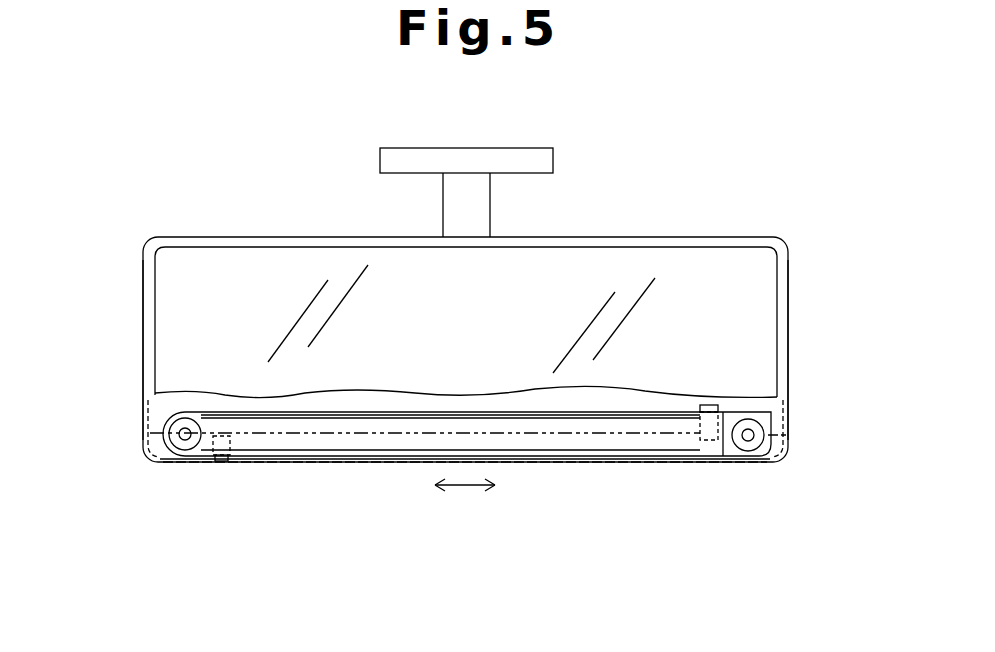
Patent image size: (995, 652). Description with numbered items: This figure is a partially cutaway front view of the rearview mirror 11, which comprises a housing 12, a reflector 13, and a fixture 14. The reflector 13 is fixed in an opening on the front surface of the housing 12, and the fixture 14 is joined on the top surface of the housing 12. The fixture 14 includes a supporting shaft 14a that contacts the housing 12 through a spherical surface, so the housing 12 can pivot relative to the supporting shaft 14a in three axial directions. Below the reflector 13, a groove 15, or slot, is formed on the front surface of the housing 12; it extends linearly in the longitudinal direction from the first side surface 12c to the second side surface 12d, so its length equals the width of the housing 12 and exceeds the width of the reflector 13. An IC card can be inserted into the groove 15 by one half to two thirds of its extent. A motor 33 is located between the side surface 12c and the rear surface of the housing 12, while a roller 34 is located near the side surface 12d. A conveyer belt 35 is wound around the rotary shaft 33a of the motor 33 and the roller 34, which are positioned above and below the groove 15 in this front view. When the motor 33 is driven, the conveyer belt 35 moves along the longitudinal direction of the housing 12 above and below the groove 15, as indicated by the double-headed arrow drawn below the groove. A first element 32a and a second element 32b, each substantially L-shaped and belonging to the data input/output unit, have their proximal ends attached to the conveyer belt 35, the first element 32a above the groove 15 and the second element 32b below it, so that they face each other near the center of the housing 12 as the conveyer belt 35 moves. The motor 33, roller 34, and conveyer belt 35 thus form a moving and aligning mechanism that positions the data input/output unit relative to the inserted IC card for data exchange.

The rearview mirror 11 is at (715, 226).
The housing 12 is at (790, 236).
The first side surface 12c is at (788, 320).
The second side surface 12d is at (143, 328).
The reflector 13 is at (252, 270).
The fixture 14 is at (522, 153).
The supporting shaft 14a is at (490, 200).
The groove 15 is at (588, 434).
The first element 32a is at (708, 405).
The second element 32b is at (217, 462).
The motor 33 is at (773, 450).
The rotary shaft 33a is at (748, 446).
The roller 34 is at (160, 452).
The conveyer belt 35 is at (645, 412).